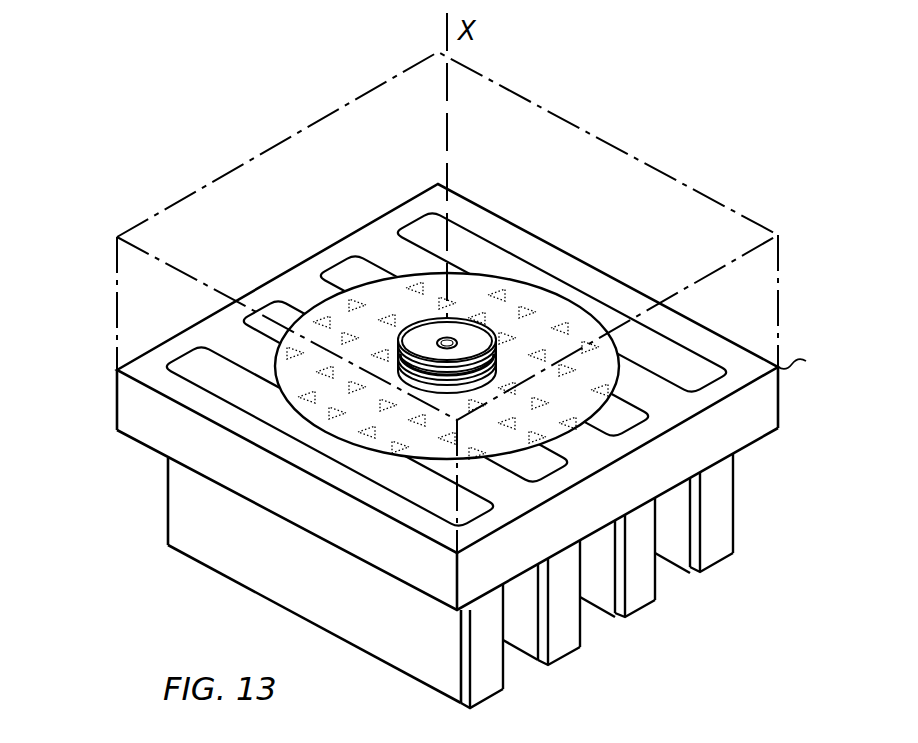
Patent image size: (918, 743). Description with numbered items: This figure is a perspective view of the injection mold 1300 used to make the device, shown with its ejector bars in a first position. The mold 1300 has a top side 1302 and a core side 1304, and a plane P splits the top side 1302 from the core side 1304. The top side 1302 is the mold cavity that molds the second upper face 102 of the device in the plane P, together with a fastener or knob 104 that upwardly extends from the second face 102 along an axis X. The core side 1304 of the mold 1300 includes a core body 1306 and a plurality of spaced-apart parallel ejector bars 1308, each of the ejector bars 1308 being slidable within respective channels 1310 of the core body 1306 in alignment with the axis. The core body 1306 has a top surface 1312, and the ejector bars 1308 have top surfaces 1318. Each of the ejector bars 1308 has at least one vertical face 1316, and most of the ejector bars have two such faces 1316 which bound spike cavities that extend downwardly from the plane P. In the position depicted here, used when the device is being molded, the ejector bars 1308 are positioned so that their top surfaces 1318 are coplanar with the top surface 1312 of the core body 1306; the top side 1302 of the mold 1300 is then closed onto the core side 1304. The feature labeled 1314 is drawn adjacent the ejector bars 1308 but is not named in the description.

The injection mold 1300 is at (184, 66).
The top side 1302 is at (193, 192).
The core side 1304 is at (117, 398).
The core body 1306 is at (153, 425).
The ejector bars 1308 is at (562, 634).
The channels 1310 is at (332, 264).
The top surface of the core body 1312 is at (352, 484).
The leg bottom surface 1314 is at (717, 562).
The vertical face 1316 is at (733, 520).
The top surfaces of the ejector bars 1318 is at (687, 365).
The second upper face 102 is at (560, 305).
The fastener or knob 104 is at (463, 328).